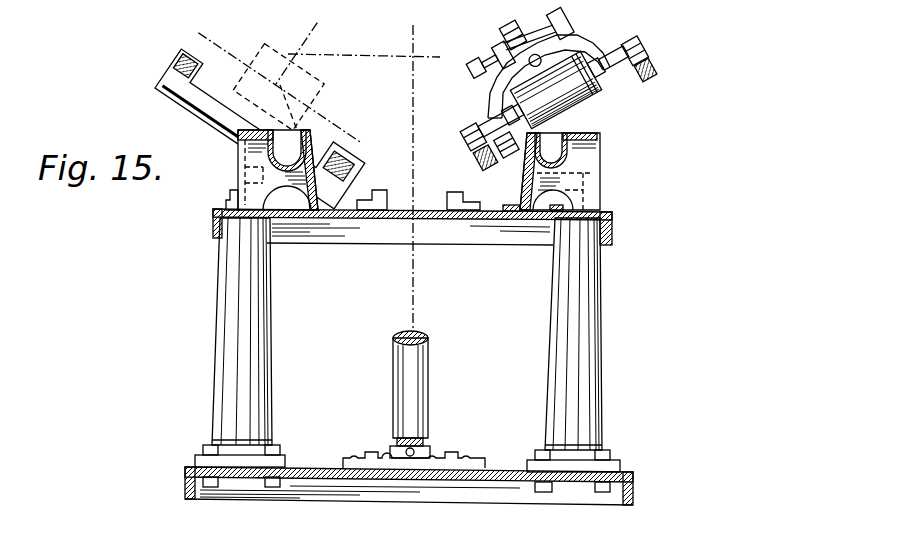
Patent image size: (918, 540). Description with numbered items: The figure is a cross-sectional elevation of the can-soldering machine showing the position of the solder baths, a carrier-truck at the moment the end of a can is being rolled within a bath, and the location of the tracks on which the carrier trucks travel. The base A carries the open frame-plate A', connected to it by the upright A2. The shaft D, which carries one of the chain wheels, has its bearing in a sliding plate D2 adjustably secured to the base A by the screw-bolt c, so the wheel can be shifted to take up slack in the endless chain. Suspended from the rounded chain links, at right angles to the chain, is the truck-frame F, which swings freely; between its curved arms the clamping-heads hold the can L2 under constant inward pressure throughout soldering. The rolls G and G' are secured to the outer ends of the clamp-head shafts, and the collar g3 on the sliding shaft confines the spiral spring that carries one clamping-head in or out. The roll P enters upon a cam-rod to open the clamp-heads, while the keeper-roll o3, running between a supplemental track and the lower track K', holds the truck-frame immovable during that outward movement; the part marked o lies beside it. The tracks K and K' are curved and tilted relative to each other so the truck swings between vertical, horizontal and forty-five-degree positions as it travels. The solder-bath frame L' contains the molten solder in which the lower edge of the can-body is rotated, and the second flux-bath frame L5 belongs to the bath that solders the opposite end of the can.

The track K is at (410, 125).
The lower track K' is at (410, 153).
The solder-bath frame L' is at (255, 170).
The can L2 is at (594, 113).
The second flux-bath frame L5 is at (556, 152).
The truck-frame F is at (565, 30).
The roll P is at (510, 35).
The roll G is at (626, 47).
The roll G' is at (483, 126).
The collar g3 is at (478, 72).
The journal collar o is at (604, 70).
The keeper-roll o3 is at (507, 158).
The open frame-plate A' is at (430, 225).
The upright A2 is at (256, 357).
The base A is at (427, 476).
The shaft D is at (430, 354).
The sliding plate D2 is at (437, 450).
The screw-bolt c is at (396, 443).